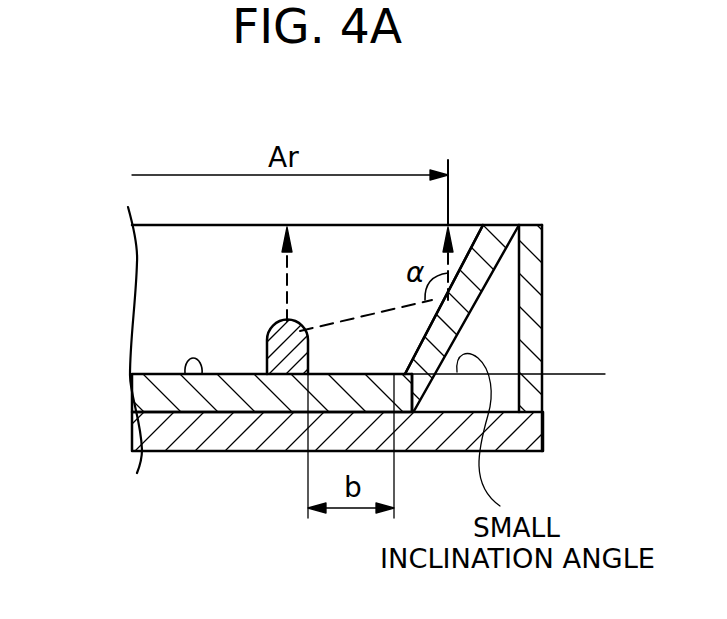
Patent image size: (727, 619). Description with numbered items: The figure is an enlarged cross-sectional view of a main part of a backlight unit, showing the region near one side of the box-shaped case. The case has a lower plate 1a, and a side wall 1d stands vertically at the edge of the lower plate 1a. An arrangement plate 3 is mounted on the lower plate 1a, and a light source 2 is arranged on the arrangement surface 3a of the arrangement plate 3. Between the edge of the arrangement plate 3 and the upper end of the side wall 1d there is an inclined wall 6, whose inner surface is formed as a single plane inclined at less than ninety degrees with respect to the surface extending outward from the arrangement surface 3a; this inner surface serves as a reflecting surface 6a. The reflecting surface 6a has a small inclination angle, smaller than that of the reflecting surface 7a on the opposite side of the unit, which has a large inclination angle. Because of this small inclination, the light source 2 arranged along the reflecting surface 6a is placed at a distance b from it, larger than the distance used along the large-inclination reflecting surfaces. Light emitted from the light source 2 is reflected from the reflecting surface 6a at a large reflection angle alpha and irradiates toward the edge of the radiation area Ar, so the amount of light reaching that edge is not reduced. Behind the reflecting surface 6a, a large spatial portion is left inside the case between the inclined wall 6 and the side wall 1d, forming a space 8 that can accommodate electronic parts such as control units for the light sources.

The lower plate 1a is at (163, 442).
The side wall 1d is at (537, 293).
The light source 2 is at (272, 344).
The arrangement plate 3 is at (157, 392).
The arrangement surface 3a is at (185, 374).
The inclined wall 6 is at (490, 245).
The reflecting surface 6a is at (470, 248).
The reflecting surface 7a is at (162, 290).
The space 8 is at (495, 344).